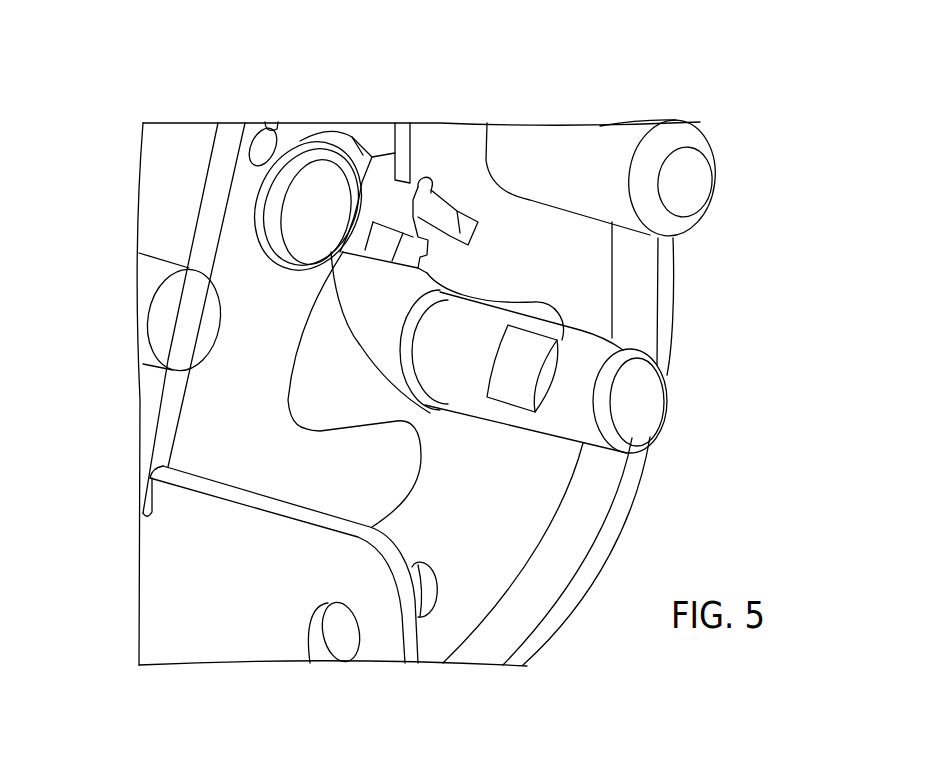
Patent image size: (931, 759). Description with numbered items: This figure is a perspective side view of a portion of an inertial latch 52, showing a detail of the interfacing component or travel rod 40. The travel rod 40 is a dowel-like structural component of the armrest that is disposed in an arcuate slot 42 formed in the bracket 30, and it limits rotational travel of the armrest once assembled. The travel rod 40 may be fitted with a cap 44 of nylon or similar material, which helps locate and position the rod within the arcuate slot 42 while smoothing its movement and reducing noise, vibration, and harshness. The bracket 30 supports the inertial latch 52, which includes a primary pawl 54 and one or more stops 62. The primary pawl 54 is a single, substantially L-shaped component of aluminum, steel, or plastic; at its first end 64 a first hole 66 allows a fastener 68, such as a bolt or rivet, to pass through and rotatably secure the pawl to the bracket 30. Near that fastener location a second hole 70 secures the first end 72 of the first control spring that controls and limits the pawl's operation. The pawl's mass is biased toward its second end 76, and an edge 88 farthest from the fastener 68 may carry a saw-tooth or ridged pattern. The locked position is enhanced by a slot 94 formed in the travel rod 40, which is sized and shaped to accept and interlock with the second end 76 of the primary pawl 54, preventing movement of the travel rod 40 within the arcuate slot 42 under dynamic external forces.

The bracket 30 is at (666, 317).
The travel rod 40 is at (600, 372).
The arcuate slot 42 is at (487, 425).
The cap 44 is at (643, 405).
The inertial latch 52 is at (785, 345).
The primary pawl 54 is at (212, 404).
The stop 62 is at (697, 177).
The first end 64 is at (199, 206).
The first hole 66 is at (199, 206).
The fastener 68 is at (295, 212).
The second hole 70 is at (262, 157).
The first end 72 is at (273, 128).
The second end 76 is at (398, 482).
The edge 88 is at (393, 508).
The slot 94 is at (527, 353).